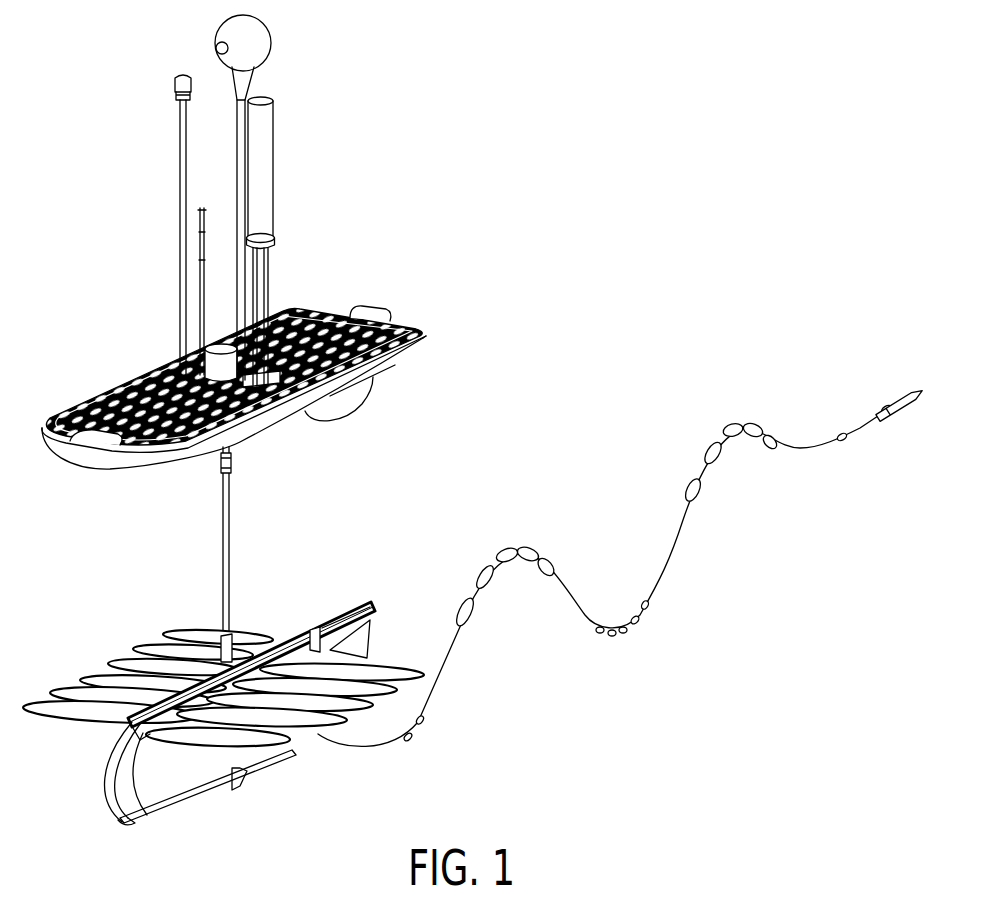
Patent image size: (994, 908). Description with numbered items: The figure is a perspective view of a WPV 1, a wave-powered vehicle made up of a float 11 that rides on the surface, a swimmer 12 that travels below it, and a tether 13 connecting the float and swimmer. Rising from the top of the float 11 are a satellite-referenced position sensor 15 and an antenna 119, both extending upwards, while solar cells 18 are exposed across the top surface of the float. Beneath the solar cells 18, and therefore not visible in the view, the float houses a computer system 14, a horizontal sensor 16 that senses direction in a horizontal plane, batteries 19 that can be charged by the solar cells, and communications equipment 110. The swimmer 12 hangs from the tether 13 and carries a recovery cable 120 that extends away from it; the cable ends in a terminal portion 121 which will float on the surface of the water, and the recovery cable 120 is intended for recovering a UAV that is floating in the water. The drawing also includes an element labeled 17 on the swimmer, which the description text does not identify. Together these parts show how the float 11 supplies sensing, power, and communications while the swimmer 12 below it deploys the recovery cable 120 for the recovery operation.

The WPV 1 is at (94, 172).
The float 11 is at (424, 338).
The swimmer 12 is at (108, 665).
The tether 13 is at (229, 563).
The computer system 14 is at (443, 393).
The satellite-referenced position sensor 15 is at (257, 38).
The horizontal sensor 16 is at (443, 393).
The tow coupling 17 is at (367, 648).
The solar cells 18 is at (126, 384).
The batteries 19 is at (443, 393).
The communications equipment 110 is at (395, 365).
The antenna 119 is at (263, 172).
The recovery cable 120 is at (803, 448).
The terminal portion 121 is at (898, 392).